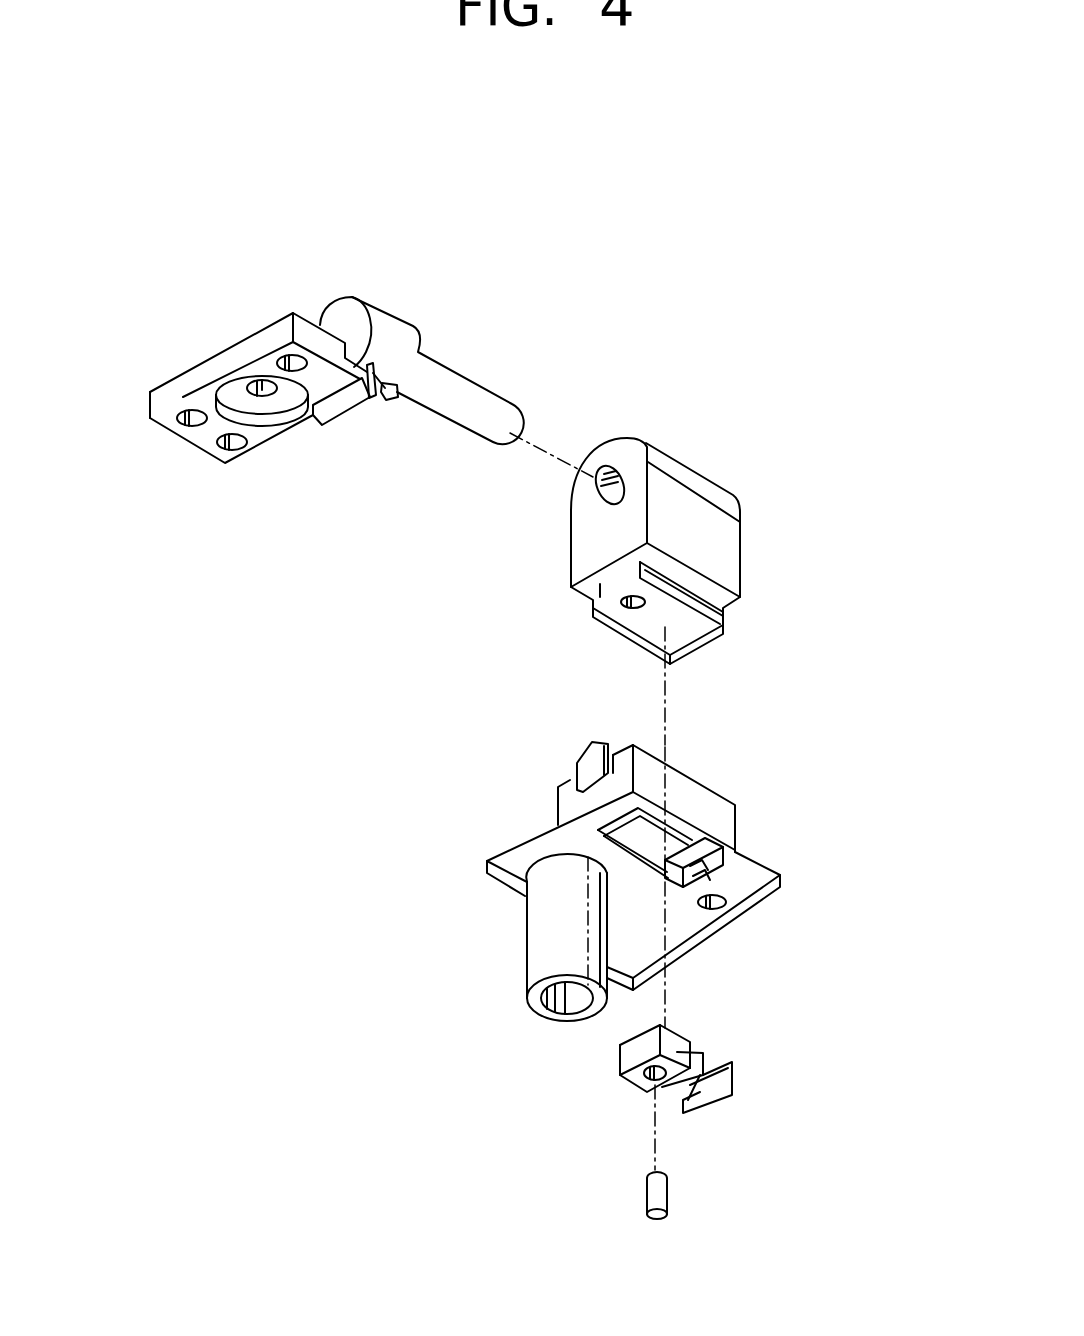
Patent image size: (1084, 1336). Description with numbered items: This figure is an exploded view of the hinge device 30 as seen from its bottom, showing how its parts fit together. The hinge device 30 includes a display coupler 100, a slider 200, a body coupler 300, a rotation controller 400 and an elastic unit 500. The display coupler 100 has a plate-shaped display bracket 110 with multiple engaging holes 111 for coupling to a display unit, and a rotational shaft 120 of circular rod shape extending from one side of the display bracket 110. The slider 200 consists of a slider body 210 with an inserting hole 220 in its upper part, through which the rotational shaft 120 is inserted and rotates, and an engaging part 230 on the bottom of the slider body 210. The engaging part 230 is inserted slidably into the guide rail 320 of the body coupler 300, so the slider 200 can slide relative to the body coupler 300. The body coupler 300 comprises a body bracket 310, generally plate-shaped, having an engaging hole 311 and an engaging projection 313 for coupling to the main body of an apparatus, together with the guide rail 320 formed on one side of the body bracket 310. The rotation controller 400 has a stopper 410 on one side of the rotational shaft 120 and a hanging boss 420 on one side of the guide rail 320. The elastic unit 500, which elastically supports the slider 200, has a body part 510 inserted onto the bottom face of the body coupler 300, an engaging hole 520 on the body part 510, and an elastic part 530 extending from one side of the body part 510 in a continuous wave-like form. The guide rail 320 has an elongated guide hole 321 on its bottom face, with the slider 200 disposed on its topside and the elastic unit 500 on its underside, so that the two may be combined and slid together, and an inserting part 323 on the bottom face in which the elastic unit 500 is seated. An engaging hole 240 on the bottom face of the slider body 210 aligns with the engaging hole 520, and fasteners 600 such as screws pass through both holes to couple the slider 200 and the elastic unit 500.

The hinge device 30 is at (113, 272).
The display coupler 100 is at (397, 528).
The display bracket 110 is at (277, 430).
The engaging holes 111 is at (240, 445).
The rotational shaft 120 is at (369, 398).
The slider 200 is at (838, 526).
The slider body 210 is at (717, 555).
The inserting hole 220 is at (626, 478).
The engaging part 230 is at (685, 633).
The engaging hole 240 is at (640, 604).
The body coupler 300 is at (862, 825).
The body bracket 310 is at (737, 910).
The engaging hole 311 is at (712, 907).
The engaging projection 313 is at (582, 942).
The guide rail 320 is at (720, 820).
The guide hole 321 is at (707, 857).
The inserting part 323 is at (738, 908).
The rotation controller 400 is at (402, 618).
The stopper 410 is at (393, 400).
The hanging boss 420 is at (590, 757).
The elastic unit 500 is at (862, 1078).
The body part 510 is at (677, 1050).
The engaging hole 520 is at (658, 1080).
The elastic part 530 is at (710, 1092).
The fasteners 600 is at (660, 1185).